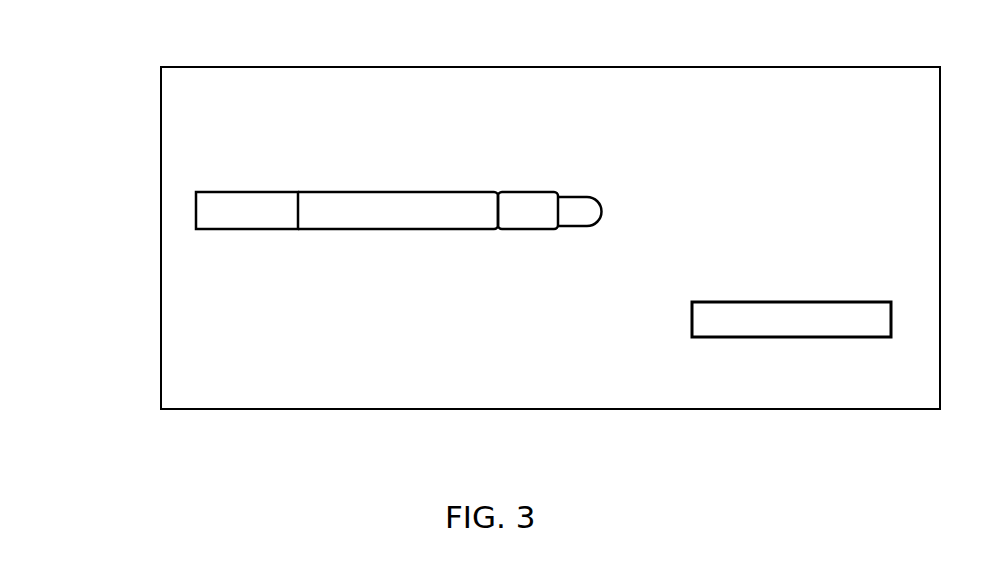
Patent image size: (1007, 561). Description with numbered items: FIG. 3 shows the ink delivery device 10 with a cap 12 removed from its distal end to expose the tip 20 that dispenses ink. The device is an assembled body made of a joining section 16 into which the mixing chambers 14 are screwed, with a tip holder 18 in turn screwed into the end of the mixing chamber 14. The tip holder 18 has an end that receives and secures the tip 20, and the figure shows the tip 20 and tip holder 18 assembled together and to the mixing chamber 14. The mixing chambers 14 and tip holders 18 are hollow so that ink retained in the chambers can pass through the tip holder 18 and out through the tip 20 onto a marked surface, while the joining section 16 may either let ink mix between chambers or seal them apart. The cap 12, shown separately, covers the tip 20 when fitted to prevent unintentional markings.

The delivery device 10 is at (138, 103).
The cap 12 is at (791, 298).
The mixing chamber 14 is at (398, 211).
The joining section 16 is at (247, 211).
The tip holder 18 is at (525, 235).
The tip 20 is at (574, 183).